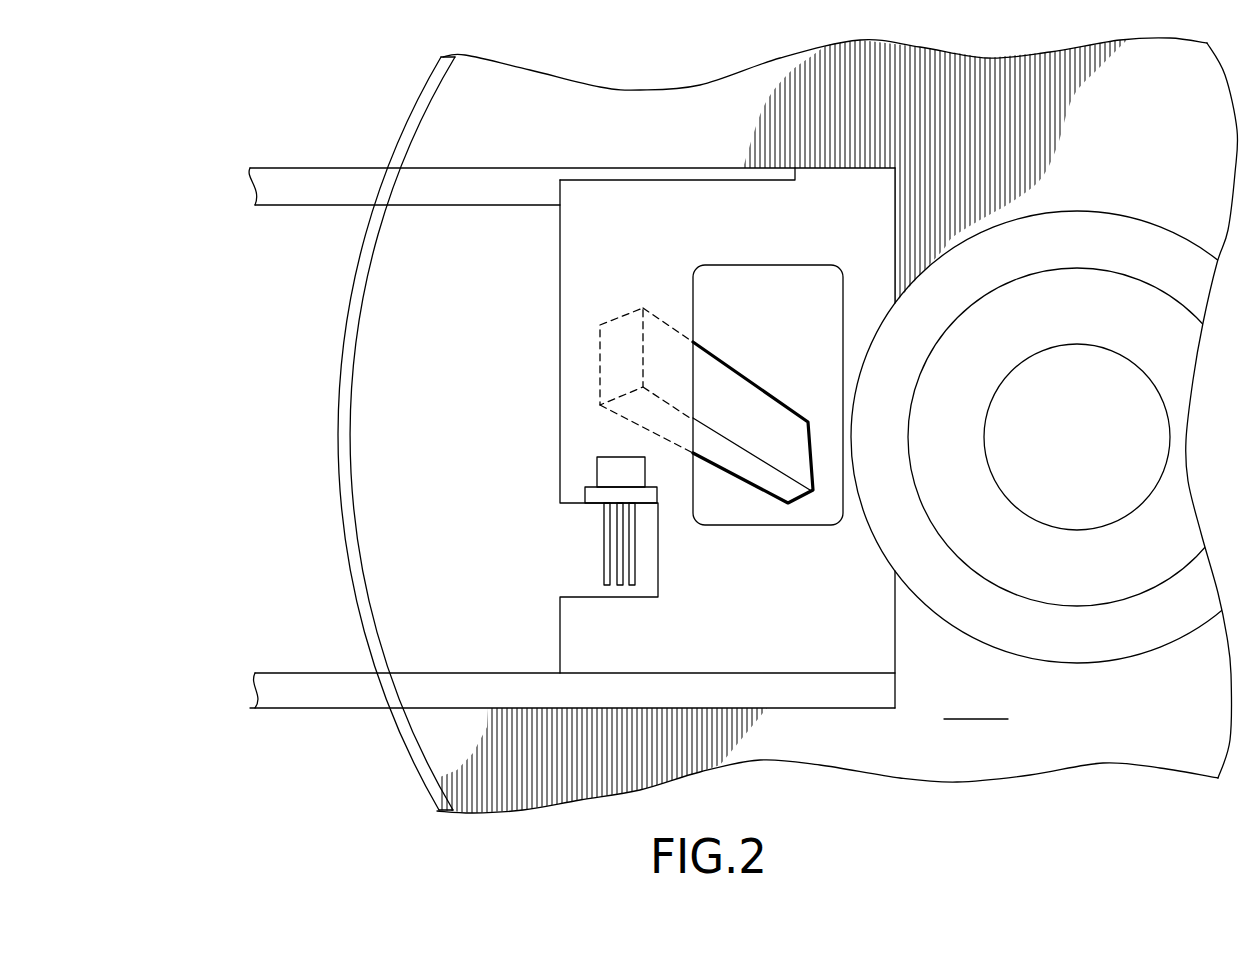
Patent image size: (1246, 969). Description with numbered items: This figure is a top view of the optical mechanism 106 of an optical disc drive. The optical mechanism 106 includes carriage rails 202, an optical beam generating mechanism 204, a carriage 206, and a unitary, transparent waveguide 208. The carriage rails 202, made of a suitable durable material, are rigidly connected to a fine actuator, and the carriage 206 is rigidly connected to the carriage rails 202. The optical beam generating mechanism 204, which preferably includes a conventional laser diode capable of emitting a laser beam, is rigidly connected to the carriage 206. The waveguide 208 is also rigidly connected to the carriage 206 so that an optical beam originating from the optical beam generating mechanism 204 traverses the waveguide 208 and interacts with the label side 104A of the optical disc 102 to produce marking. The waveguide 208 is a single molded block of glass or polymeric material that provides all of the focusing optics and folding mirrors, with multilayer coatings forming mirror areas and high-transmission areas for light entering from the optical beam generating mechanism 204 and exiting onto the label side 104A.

The optical disc 102 is at (340, 435).
The label side 104A is at (841, 425).
The optical mechanism 106 is at (155, 184).
The carriage rails 202 is at (281, 175).
The optical beam generating mechanism 204 is at (603, 537).
The carriage 206 is at (648, 268).
The unitary, transparent waveguide 208 is at (750, 378).